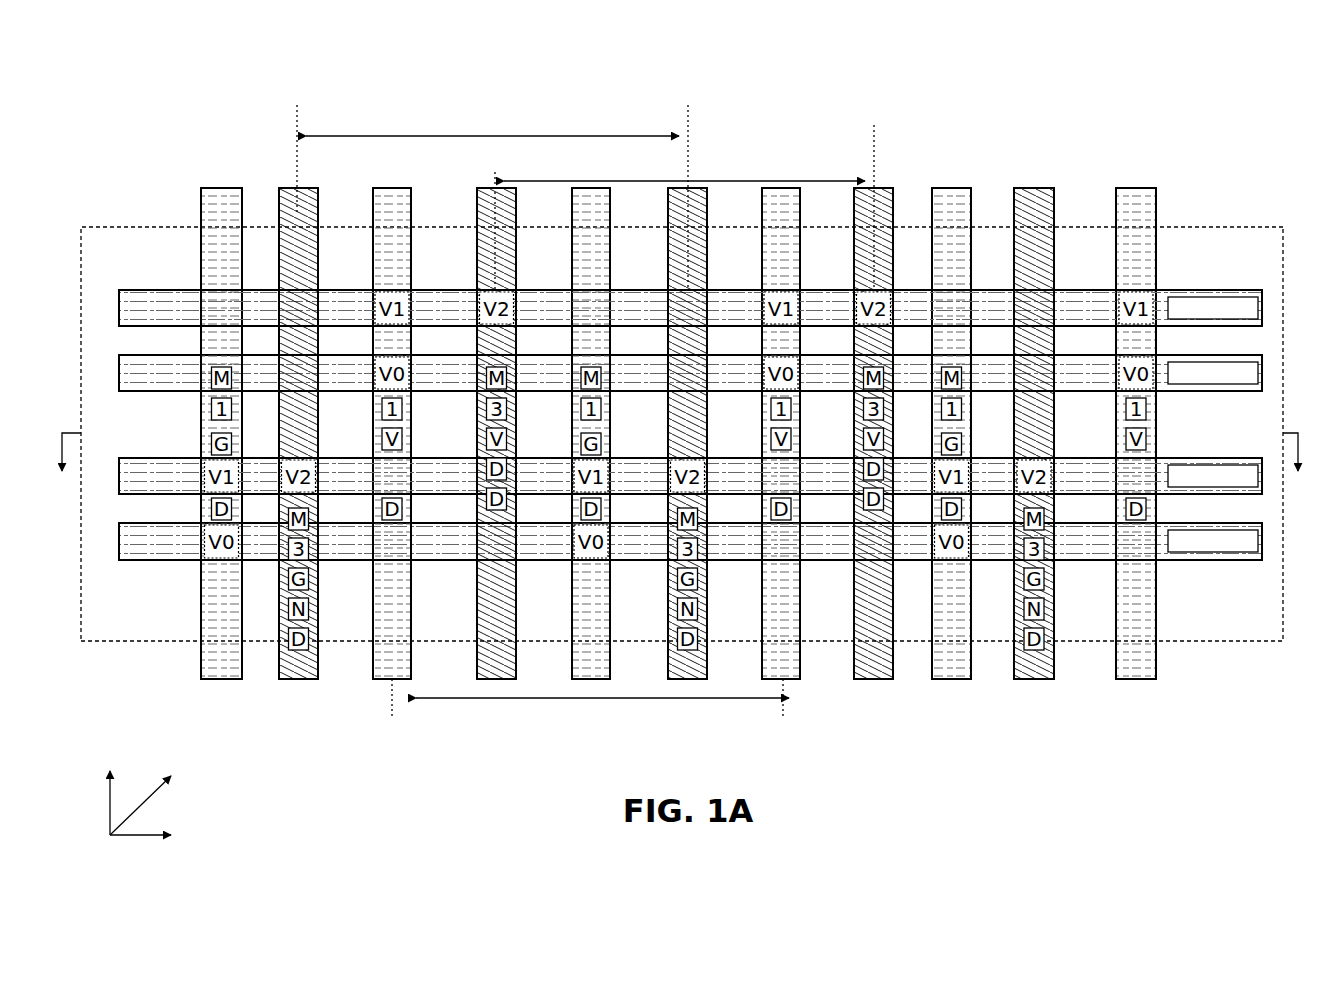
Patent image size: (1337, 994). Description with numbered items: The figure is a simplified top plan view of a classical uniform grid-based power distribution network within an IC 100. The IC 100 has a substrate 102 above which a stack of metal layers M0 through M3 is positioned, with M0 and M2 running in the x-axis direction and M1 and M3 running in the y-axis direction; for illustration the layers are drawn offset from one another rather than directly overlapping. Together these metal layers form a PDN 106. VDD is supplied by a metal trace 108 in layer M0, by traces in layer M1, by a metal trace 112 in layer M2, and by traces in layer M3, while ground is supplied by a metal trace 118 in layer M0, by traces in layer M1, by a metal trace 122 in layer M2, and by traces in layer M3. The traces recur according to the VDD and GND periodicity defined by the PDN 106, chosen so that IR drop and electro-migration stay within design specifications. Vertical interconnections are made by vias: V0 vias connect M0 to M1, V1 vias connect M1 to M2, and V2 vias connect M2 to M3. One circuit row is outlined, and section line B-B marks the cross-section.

The IC 100 is at (685, 444).
The substrate 102 is at (682, 434).
The PDN 106 is at (1276, 205).
The metal trace 108 is at (135, 393).
The metal trace 112 is at (135, 328).
The metal trace 118 is at (163, 562).
The metal trace 122 is at (137, 458).